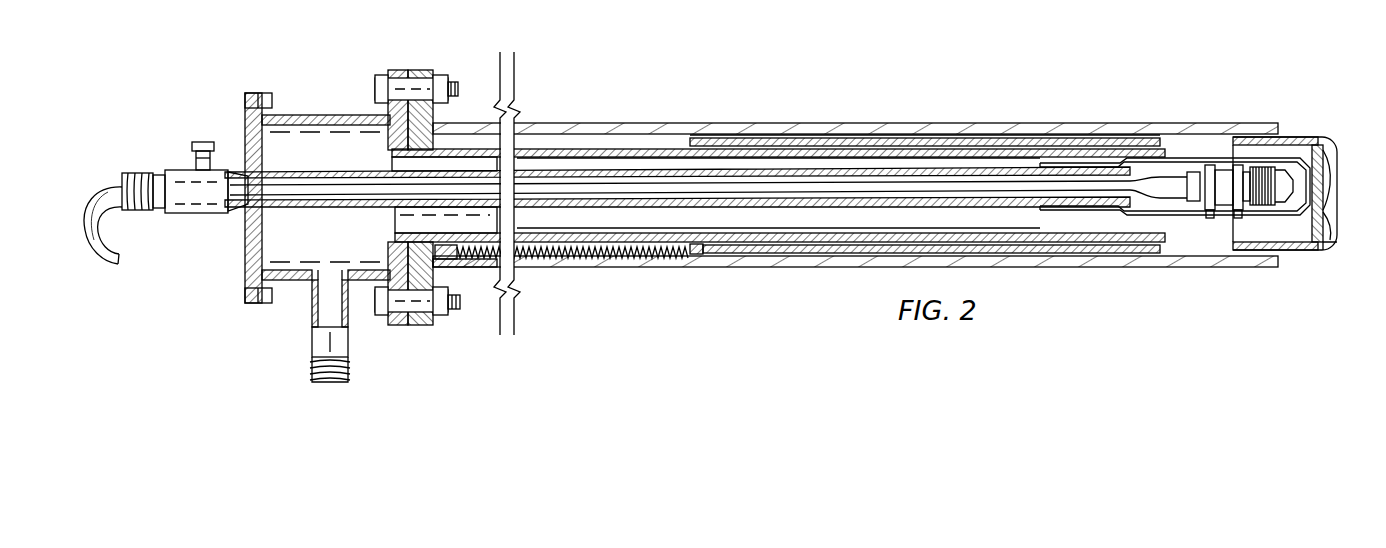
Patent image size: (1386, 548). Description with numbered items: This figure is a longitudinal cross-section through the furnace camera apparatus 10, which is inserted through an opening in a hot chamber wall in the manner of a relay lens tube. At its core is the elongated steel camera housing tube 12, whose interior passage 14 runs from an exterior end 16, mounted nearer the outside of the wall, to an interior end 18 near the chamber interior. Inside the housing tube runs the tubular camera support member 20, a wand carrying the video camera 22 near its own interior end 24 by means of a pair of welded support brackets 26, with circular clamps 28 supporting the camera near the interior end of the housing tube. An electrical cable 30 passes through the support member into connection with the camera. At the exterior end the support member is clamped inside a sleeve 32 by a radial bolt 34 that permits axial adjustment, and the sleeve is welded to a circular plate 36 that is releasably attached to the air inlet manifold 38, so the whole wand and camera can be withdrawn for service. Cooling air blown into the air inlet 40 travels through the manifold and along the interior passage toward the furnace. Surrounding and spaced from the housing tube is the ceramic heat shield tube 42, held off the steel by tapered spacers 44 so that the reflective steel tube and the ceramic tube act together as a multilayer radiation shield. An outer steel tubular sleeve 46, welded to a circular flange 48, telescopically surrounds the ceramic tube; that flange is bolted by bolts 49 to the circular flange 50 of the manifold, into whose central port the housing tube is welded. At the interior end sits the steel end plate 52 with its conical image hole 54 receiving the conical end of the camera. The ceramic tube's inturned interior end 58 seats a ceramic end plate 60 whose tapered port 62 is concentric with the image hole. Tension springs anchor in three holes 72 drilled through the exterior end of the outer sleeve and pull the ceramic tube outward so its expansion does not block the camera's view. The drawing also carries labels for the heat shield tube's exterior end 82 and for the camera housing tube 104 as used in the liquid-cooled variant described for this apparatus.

The camera apparatus 10 is at (998, 58).
The camera housing tube 12 is at (648, 125).
The interior passage 14 is at (797, 218).
The exterior end 16 is at (387, 160).
The interior end 18 is at (1297, 137).
The camera support member 20 is at (556, 168).
The video camera 22 is at (1223, 178).
The interior end 24 is at (1098, 182).
The support brackets 26 is at (1228, 216).
The circular clamps 28 is at (1212, 218).
The electrical cable 30 is at (100, 192).
The sleeve 32 is at (192, 217).
The radial bolt 34 is at (190, 146).
The circular plate 36 is at (245, 127).
The air inlet manifold 38 is at (310, 115).
The air inlet 40 is at (323, 385).
The ceramic heat shield tube 42 is at (868, 137).
The spacers 44 is at (752, 150).
The outer tubular sleeve 46 is at (810, 140).
The circular flange 48 is at (418, 70).
The bolts 49 is at (373, 92).
The circular flange 50 is at (395, 72).
The steel end plate 52 is at (1282, 253).
The image hole 54 is at (1320, 185).
The interior end 58 is at (1335, 226).
The ceramic end plate 60 is at (1333, 250).
The port 62 is at (1323, 170).
The holes 72 is at (460, 262).
The exterior end 82 is at (722, 258).
The camera housing tube 104 is at (297, 283).